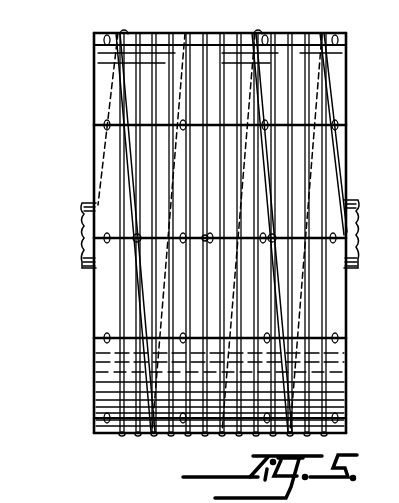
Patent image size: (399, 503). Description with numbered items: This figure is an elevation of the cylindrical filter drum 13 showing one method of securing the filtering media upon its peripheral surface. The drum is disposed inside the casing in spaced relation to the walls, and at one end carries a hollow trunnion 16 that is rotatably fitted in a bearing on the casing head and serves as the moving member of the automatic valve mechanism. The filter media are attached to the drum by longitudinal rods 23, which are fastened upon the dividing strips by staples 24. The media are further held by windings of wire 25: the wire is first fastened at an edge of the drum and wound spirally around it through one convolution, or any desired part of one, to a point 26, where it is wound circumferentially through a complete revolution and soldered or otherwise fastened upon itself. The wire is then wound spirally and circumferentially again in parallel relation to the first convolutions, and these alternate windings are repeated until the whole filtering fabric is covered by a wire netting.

The cylindrical filter drum 13 is at (344, 82).
The hollow trunnion 16 is at (357, 211).
The longitudinal rods 23 is at (348, 110).
The staples 24 is at (345, 136).
The wire 25 is at (327, 175).
The point 26 is at (268, 236).